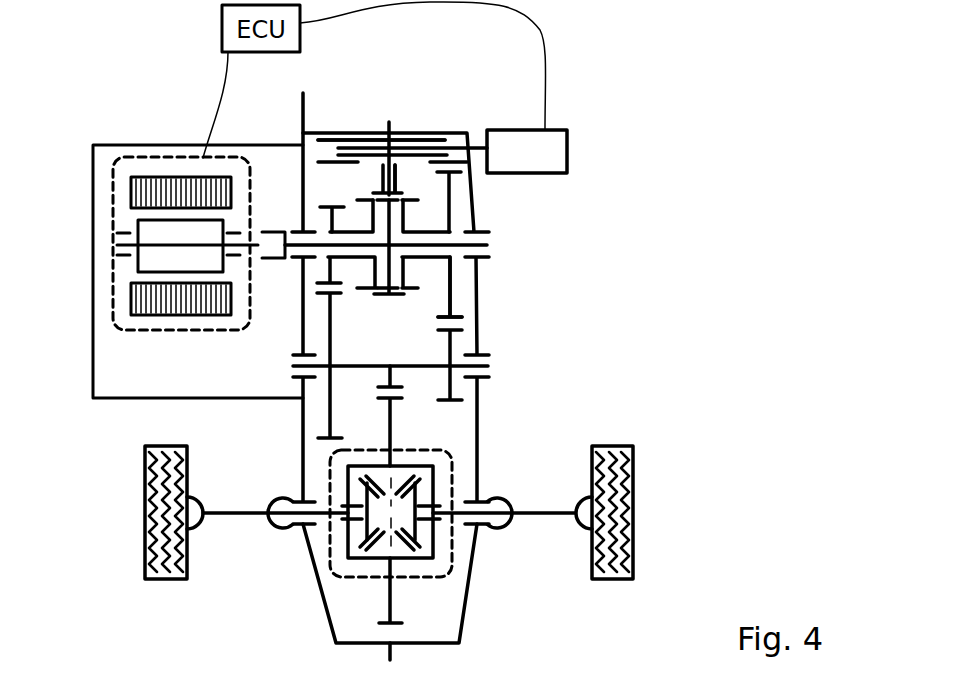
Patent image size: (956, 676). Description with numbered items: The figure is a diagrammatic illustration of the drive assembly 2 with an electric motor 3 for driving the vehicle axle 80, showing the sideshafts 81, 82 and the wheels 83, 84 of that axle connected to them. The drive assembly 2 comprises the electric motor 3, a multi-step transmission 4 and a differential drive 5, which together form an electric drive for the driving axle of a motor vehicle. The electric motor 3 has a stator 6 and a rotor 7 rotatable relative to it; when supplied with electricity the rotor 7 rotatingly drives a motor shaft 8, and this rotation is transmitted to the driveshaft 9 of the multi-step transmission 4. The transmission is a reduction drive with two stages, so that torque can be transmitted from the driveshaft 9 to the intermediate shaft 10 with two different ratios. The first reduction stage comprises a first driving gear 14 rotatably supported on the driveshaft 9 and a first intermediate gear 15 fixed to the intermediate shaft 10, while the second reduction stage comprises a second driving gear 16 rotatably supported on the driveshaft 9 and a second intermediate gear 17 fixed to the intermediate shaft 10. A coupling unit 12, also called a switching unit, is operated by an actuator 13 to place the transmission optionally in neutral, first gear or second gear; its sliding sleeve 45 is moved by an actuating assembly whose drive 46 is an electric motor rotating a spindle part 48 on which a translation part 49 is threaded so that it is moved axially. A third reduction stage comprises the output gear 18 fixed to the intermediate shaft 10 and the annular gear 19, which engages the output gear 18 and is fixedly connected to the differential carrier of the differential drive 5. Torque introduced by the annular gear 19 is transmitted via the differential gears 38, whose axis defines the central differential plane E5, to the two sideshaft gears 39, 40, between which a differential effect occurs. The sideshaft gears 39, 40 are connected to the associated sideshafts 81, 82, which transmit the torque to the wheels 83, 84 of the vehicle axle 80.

The drive assembly 2 is at (395, 96).
The electric motor 3 is at (184, 157).
The multi-step transmission 4 is at (398, 186).
The differential drive 5 is at (447, 572).
The stator 6 is at (217, 177).
The rotor 7 is at (157, 235).
The motor shaft 8 is at (173, 247).
The driveshaft 9 is at (457, 245).
The intermediate shaft 10 is at (458, 363).
The coupling unit 12 is at (377, 166).
The actuator 13 is at (497, 111).
The first driving gear 14 is at (328, 212).
The first intermediate gear 15 is at (330, 424).
The second driving gear 16 is at (452, 207).
The second intermediate gear 17 is at (450, 328).
The output gear 18 is at (392, 378).
The annular gear 19 is at (395, 427).
The differential gears 38 is at (382, 542).
The sideshaft gear 39 is at (367, 525).
The sideshaft gear 40 is at (413, 497).
The sliding sleeve 45 is at (413, 168).
The drive 46 is at (557, 153).
The spindle part 48 is at (474, 146).
The translation part 49 is at (372, 142).
The vehicle axle 80 is at (680, 510).
The sideshaft 81 is at (227, 517).
The sideshaft 82 is at (545, 512).
The wheel 83 is at (145, 473).
The wheel 84 is at (632, 467).
The central differential plane E5 is at (392, 549).